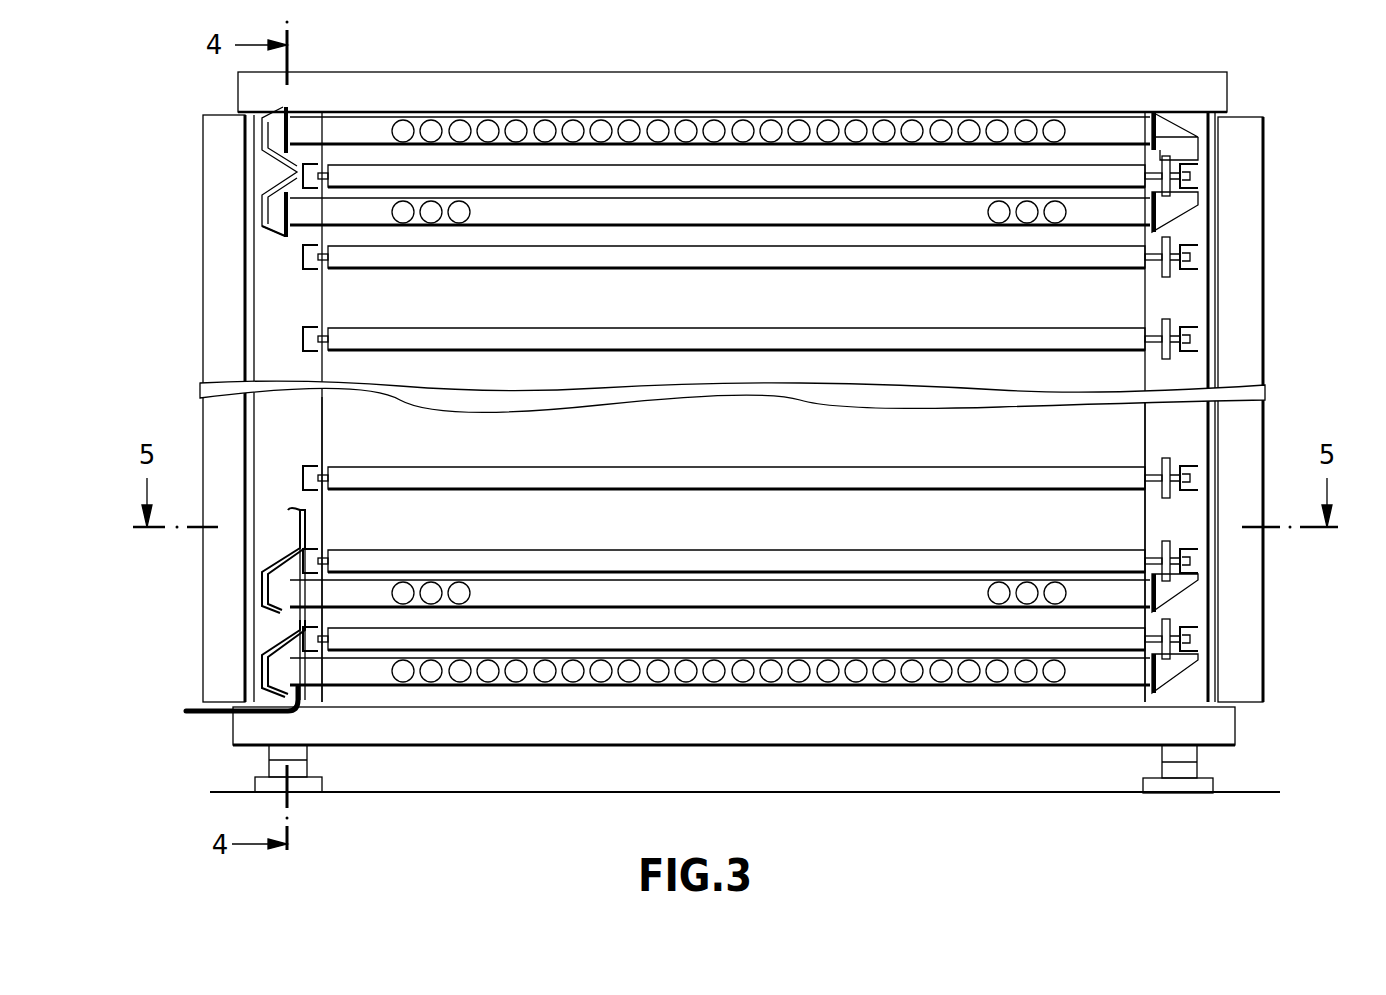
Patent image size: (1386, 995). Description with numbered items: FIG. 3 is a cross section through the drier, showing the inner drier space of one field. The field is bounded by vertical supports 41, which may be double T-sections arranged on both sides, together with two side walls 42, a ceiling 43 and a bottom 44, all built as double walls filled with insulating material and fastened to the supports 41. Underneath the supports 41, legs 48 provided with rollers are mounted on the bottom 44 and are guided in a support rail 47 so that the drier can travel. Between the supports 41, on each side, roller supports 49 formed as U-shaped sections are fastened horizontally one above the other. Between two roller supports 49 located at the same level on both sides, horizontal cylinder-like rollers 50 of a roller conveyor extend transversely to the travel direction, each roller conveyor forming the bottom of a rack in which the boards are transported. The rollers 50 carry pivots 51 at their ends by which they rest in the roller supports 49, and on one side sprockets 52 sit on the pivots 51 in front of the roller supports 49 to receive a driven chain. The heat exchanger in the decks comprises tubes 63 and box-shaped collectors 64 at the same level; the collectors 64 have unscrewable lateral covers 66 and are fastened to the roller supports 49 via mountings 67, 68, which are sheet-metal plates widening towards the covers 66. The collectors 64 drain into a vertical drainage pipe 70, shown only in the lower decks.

The vertical supports 41 is at (1148, 412).
The side walls 42 is at (1237, 357).
The ceiling 43 is at (1203, 84).
The bottom 44 is at (1218, 727).
The support rail 47 is at (1165, 790).
The legs 48 is at (1185, 770).
The roller supports 49 is at (1195, 500).
The rollers 50 is at (1120, 332).
The pivots 51 is at (1178, 328).
The sprockets 52 is at (1167, 238).
The tubes 63 is at (428, 128).
The collectors 64 is at (300, 130).
The lateral covers 66 is at (287, 205).
The mounting 67 is at (275, 230).
The mounting 68 is at (1165, 130).
The drainage pipe 70 is at (287, 528).